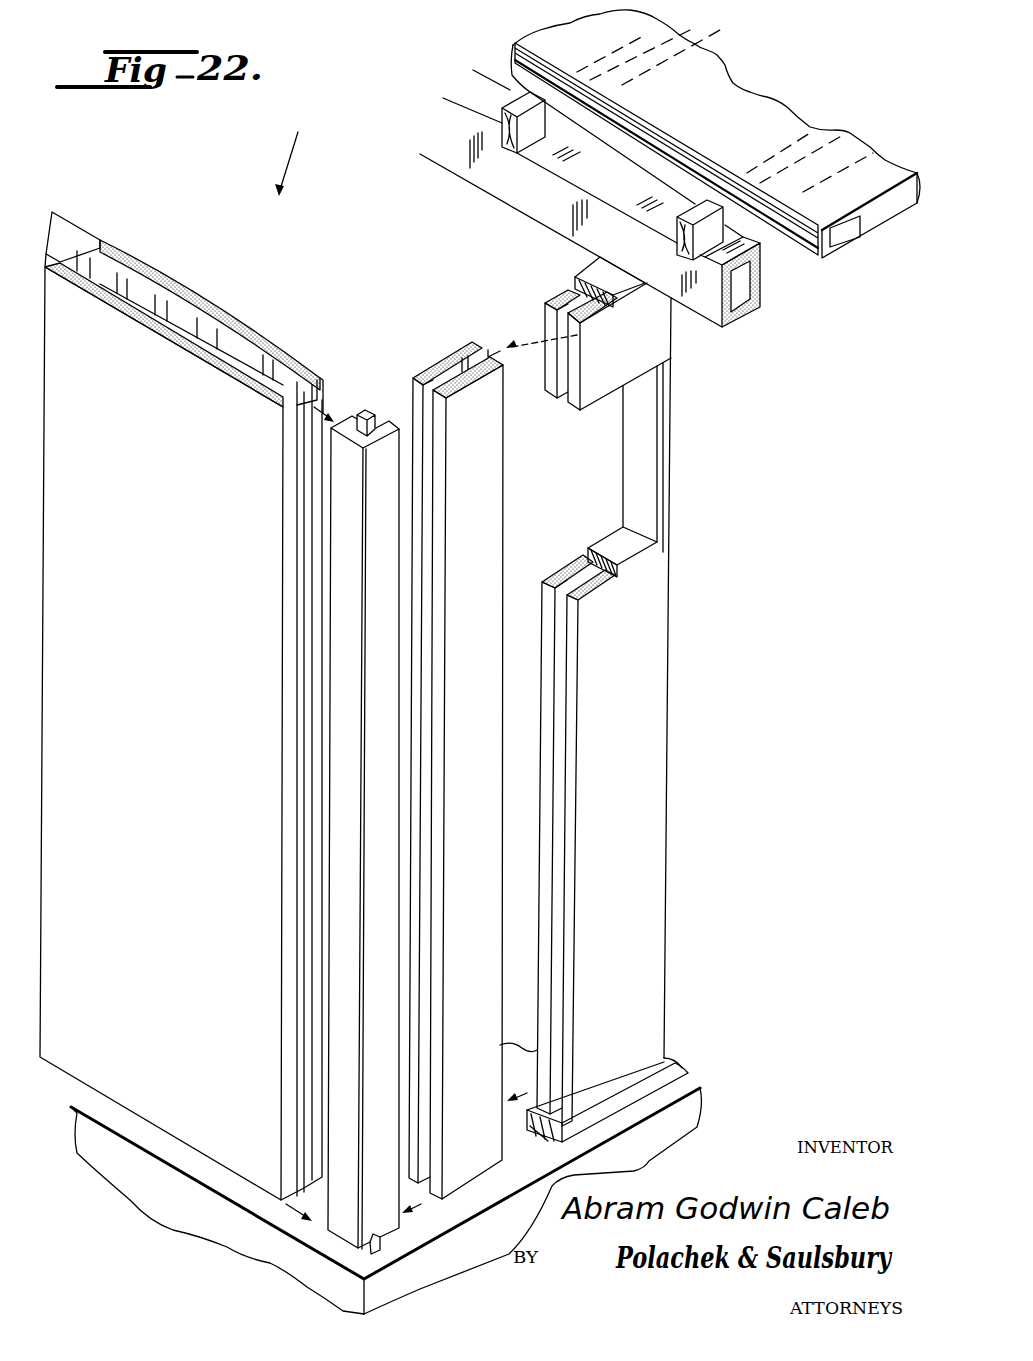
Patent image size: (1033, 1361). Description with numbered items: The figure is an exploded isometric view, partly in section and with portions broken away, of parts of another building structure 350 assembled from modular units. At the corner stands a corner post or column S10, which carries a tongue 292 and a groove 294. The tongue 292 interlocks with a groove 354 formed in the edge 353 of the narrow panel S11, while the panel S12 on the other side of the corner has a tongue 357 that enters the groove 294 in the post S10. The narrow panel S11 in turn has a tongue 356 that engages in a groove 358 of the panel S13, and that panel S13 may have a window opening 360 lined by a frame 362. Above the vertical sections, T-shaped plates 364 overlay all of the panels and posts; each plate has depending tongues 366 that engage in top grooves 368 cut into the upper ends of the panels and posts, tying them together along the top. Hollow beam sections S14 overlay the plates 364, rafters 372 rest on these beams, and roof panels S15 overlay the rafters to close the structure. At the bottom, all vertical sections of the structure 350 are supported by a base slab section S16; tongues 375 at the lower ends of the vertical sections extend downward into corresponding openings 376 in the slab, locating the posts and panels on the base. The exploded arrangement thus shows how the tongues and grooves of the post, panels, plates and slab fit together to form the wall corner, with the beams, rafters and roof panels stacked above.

The building structure 350 is at (299, 149).
The T-shaped plate 364 is at (68, 227).
The depending tongue 366 is at (100, 250).
The top groove 368 is at (168, 289).
The groove 294 is at (350, 418).
The tongue 292 is at (395, 447).
The corner post S10 is at (405, 440).
The groove 354 is at (424, 392).
The narrow panel S11 is at (480, 525).
The tongue 356 is at (506, 345).
The rafter 372 is at (512, 75).
The hollow beam section S14 is at (531, 193).
The roof panel S15 is at (690, 18).
The frame 362 is at (641, 457).
The window opening 360 is at (648, 562).
The groove 358 is at (561, 634).
The panel S13 is at (637, 644).
The panel S12 is at (105, 1066).
The tongue 357 is at (300, 1157).
The edge 353 is at (437, 1163).
The opening 376 is at (371, 1254).
The tongue 375 is at (383, 1243).
The base slab section S16 is at (466, 1246).